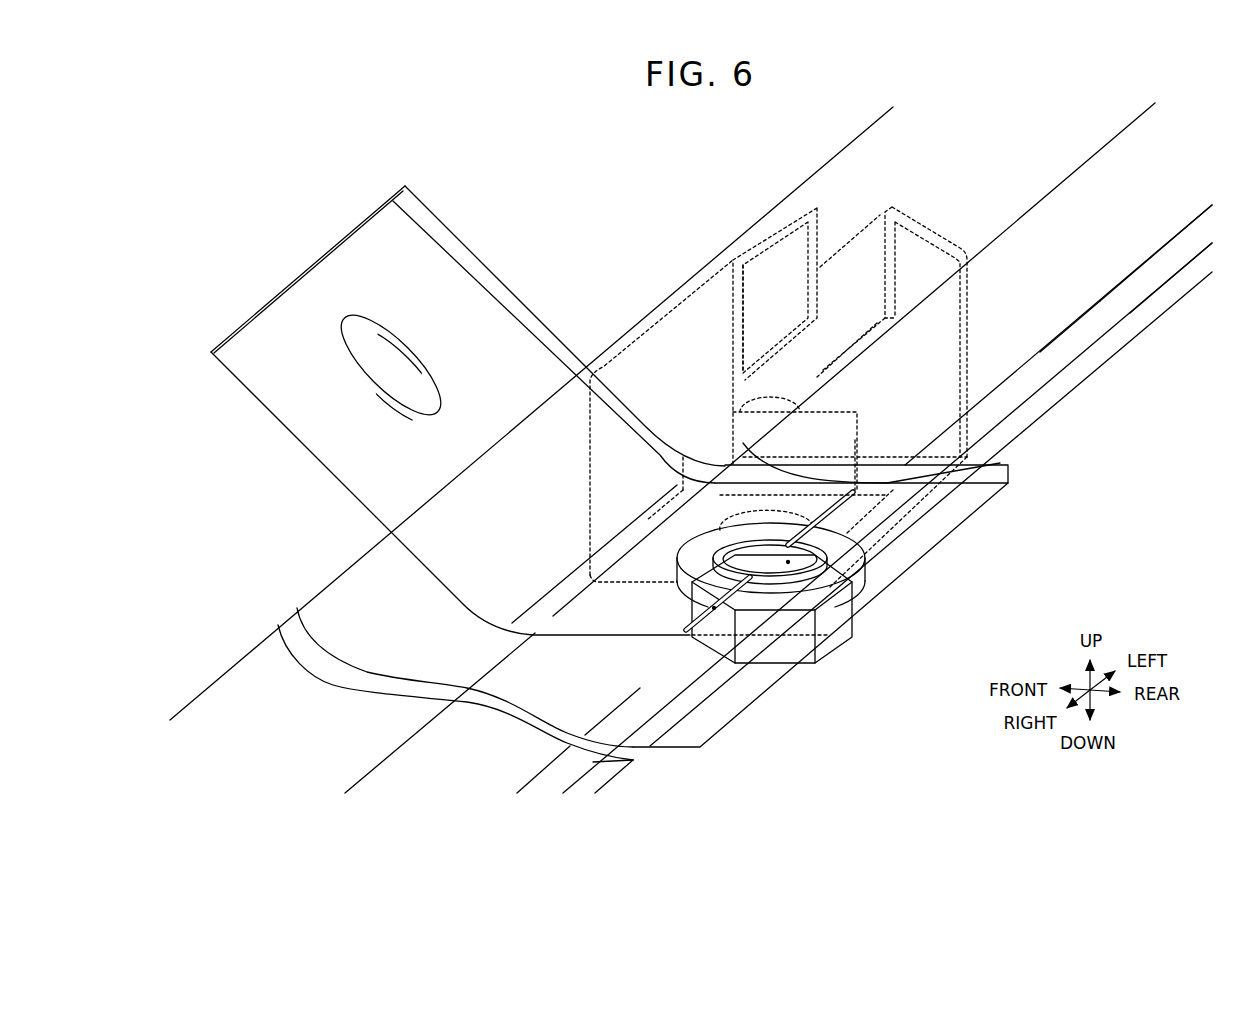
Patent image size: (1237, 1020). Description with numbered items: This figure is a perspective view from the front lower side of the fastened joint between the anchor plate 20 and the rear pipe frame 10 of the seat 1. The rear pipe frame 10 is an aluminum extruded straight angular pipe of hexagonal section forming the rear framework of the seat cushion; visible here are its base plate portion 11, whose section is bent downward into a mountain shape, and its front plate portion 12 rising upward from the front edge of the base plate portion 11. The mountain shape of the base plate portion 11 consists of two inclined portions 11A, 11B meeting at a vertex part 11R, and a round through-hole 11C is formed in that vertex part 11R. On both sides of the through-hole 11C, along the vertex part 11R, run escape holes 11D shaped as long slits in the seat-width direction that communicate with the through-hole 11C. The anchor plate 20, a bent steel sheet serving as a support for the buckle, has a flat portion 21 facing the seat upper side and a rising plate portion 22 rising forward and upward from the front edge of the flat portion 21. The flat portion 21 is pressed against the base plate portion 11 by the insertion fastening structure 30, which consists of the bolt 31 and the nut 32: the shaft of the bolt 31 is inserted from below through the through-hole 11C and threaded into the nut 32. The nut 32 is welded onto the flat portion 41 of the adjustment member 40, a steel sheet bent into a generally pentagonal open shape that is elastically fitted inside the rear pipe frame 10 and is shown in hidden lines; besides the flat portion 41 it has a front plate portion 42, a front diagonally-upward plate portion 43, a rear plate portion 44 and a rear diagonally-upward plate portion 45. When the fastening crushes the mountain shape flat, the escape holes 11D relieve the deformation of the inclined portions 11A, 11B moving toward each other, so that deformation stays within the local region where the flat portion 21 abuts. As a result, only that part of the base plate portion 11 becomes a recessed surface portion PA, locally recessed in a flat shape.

The seat 1 is at (476, 159).
The rear pipe frame 10 is at (846, 142).
The base plate portion 11 is at (1190, 410).
The inclined portion 11A is at (1070, 293).
The inclined portion 11B is at (1152, 307).
The vertex part 11R is at (1050, 367).
The through-hole 11C is at (788, 562).
The escape holes 11D is at (714, 608).
The front plate portion 12 is at (822, 190).
The recessed surface portion PA is at (902, 510).
The anchor plate 20 is at (605, 473).
The flat portion 21 is at (897, 563).
The rising plate portion 22 is at (299, 403).
The insertion fastening structure 30 is at (822, 555).
The bolt 31 is at (782, 655).
The nut 32 is at (840, 423).
The adjustment member 40 is at (806, 410).
The flat portion 41 is at (887, 455).
The front plate portion 42 is at (713, 343).
The front diagonally-upward plate portion 43 is at (775, 235).
The rear plate portion 44 is at (940, 353).
The rear diagonally-upward plate portion 45 is at (920, 258).